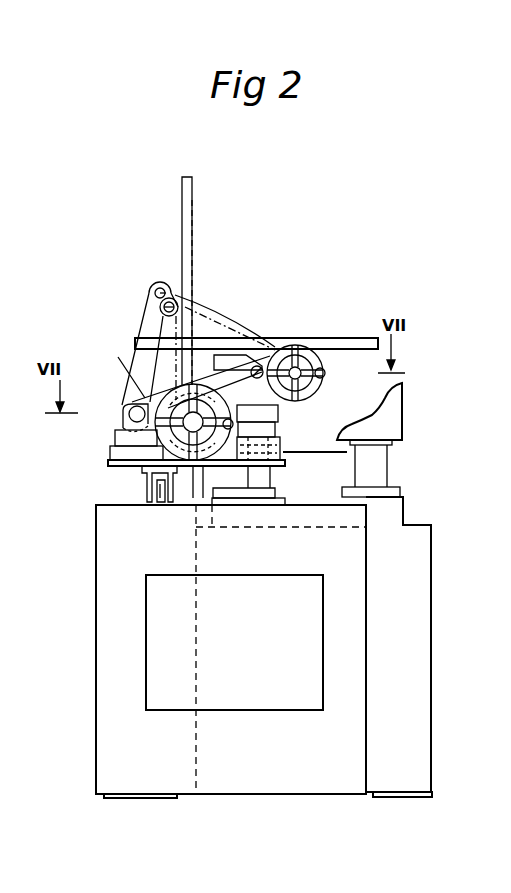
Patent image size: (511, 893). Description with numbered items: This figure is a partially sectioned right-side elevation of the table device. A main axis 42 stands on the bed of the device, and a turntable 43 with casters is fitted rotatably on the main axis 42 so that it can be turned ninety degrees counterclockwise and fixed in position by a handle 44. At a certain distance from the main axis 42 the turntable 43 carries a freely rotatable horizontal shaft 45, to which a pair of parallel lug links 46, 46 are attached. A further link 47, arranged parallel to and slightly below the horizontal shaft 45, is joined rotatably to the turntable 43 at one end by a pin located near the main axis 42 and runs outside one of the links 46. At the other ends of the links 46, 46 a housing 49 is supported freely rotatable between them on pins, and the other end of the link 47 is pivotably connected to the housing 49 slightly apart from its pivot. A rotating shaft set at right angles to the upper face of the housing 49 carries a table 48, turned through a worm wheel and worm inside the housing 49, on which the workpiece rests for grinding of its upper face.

The main axis 42 is at (270, 484).
The turntable 43 is at (112, 465).
The handle 44 is at (347, 452).
The horizontal shaft 45 is at (120, 417).
The links 46 is at (130, 370).
The link 47 is at (272, 412).
The table 48 is at (358, 340).
The housing 49 is at (223, 356).